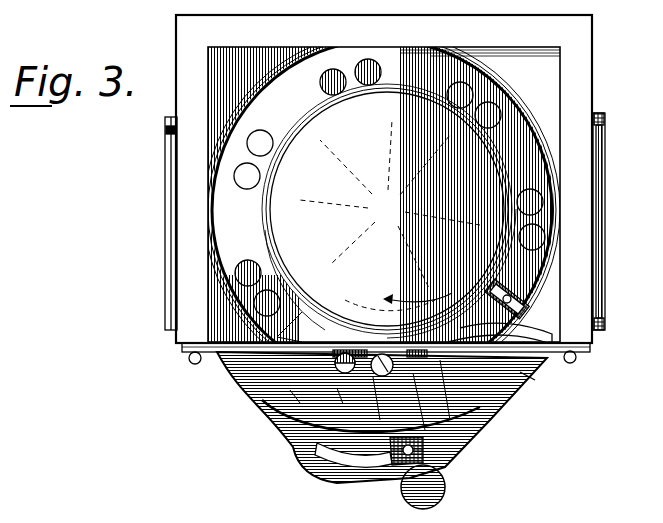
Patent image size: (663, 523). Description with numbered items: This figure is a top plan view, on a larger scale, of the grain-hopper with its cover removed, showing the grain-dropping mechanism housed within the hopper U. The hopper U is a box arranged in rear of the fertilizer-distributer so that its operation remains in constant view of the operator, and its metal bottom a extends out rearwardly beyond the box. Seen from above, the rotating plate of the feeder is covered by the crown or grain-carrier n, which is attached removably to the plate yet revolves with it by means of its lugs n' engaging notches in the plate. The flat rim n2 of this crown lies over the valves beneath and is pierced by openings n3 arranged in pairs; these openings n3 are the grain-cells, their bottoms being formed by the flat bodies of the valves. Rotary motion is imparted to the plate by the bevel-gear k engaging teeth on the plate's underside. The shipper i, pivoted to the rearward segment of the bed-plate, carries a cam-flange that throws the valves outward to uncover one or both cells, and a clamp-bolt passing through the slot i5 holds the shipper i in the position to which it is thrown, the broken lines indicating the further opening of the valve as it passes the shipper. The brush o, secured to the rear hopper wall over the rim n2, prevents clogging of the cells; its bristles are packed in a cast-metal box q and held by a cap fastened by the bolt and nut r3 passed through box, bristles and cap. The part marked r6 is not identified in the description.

The hopper u is at (385, 198).
The grain-carrier n is at (382, 210).
The rim n2 is at (290, 192).
The lugs n' is at (375, 76).
The openings n3 is at (448, 100).
The brush o is at (422, 293).
The cast-metal box q is at (500, 322).
The bolt and nut r3 is at (528, 298).
The bottom a is at (248, 380).
The bevel-gear k is at (291, 459).
The slot i5 is at (383, 464).
The shipper i is at (447, 488).
The lever r6 is at (536, 377).